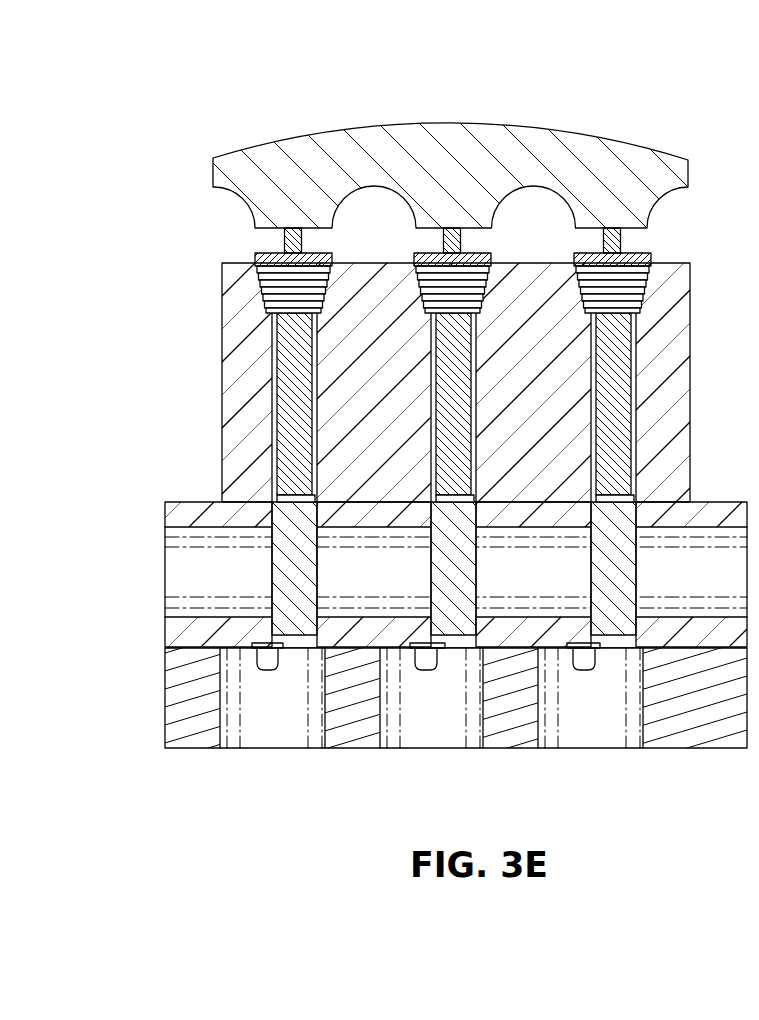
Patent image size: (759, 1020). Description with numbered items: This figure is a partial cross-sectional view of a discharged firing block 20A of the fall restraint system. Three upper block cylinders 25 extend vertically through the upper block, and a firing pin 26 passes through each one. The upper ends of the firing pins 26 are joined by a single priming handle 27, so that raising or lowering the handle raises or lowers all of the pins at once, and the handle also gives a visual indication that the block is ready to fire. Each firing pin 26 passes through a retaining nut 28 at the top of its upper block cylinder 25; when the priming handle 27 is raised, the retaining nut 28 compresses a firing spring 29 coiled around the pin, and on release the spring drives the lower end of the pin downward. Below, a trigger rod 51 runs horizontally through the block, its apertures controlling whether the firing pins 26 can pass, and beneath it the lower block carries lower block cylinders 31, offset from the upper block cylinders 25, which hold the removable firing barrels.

The mold assembly 20A is at (126, 116).
The priming handle 27 is at (468, 168).
The retaining nut 28 is at (262, 253).
The firing spring 29 is at (317, 372).
The upper block cylinder 25 is at (317, 487).
The firing pin 26 is at (317, 587).
The trigger rod 51 is at (178, 572).
The lower block cylinder 31 is at (332, 748).